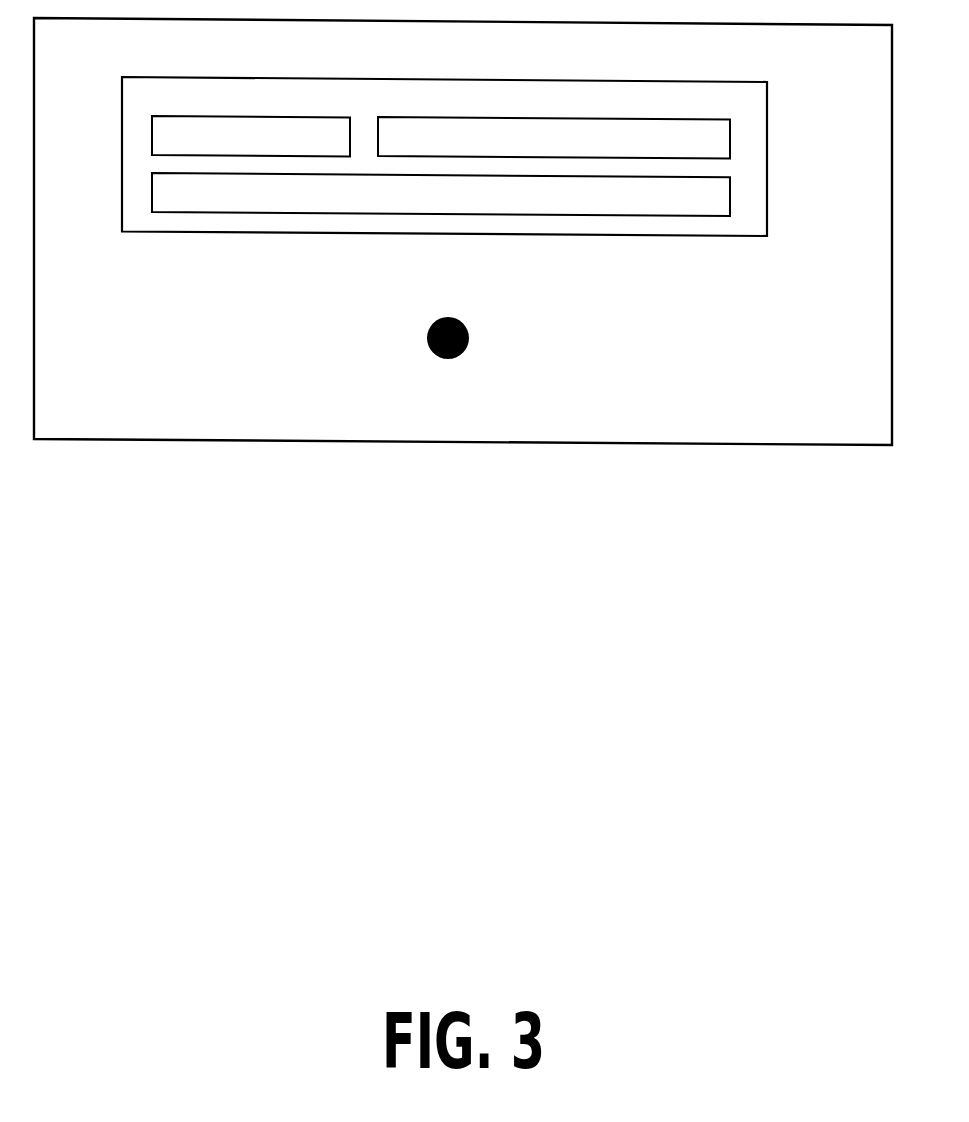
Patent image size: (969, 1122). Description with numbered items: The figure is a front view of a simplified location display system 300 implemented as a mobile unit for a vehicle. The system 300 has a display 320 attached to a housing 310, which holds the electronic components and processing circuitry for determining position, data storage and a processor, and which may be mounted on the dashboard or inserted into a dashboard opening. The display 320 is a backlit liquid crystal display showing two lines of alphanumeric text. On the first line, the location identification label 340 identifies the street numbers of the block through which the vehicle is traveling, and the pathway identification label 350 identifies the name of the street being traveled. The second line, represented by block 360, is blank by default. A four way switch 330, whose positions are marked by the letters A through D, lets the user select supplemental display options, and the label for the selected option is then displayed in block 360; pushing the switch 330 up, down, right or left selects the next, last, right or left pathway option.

The simplified location display system 300 is at (463, 291).
The housing 310 is at (825, 452).
The display 320 is at (775, 174).
The four way switch 330 is at (469, 320).
The location identification label 340 is at (217, 112).
The pathway identification label 350 is at (448, 112).
The block 360 is at (216, 203).